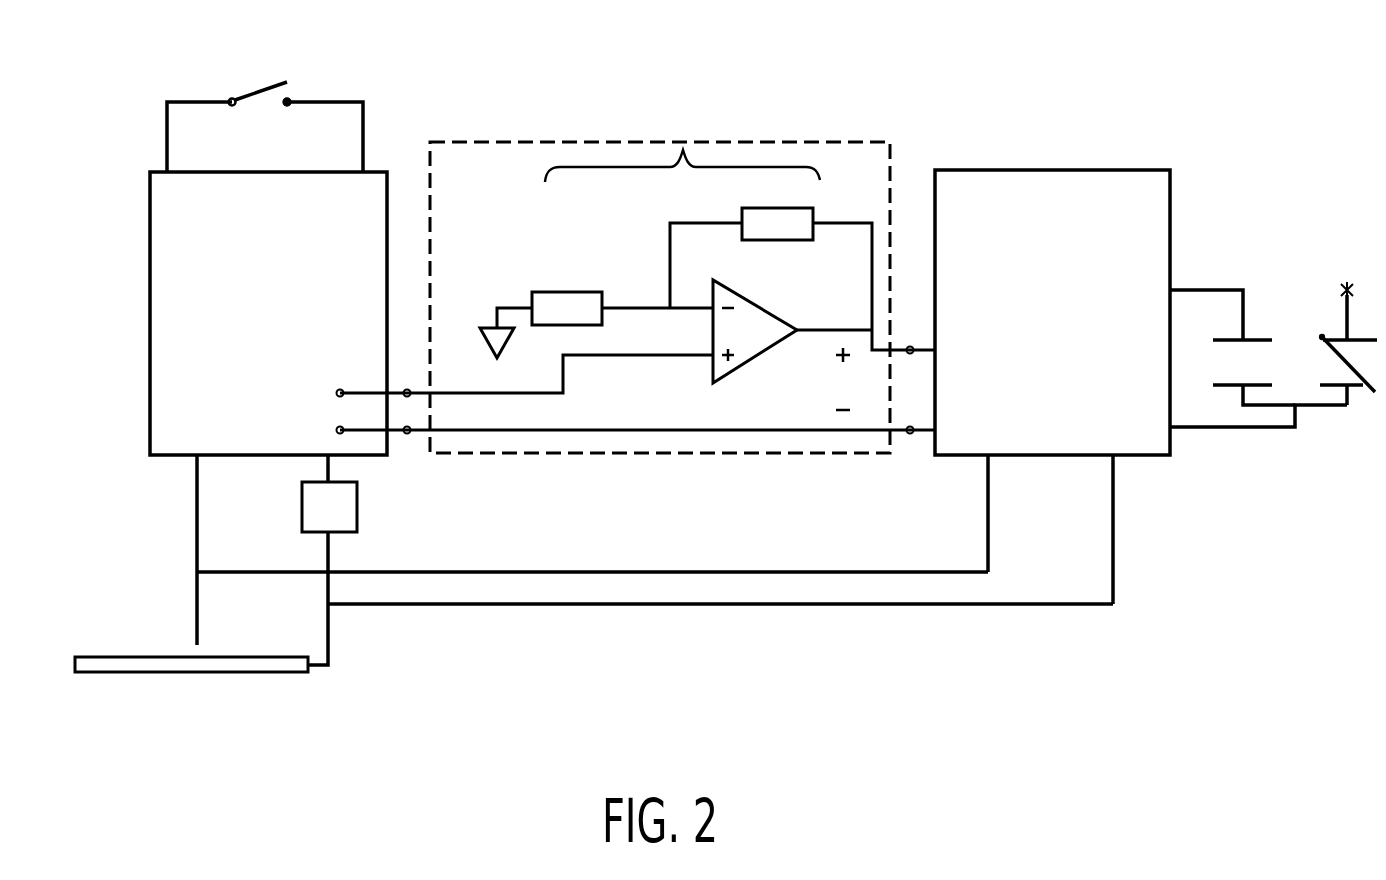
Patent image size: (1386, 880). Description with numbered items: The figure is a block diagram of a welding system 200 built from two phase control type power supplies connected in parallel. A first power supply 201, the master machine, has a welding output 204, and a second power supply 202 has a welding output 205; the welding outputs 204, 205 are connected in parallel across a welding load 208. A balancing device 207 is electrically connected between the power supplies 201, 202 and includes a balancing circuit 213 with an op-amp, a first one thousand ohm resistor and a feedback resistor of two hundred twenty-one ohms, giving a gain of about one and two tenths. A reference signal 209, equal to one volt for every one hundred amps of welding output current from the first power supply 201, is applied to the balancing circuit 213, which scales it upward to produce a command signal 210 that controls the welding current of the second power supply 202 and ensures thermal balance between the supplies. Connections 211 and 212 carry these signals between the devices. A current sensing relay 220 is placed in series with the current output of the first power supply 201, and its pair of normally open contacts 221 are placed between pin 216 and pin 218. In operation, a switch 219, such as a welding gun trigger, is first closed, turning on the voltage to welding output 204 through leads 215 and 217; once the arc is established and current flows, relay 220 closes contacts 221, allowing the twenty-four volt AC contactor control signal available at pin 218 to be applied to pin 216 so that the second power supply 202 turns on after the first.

The welding system 200 is at (1066, 640).
The first power supply 201 is at (150, 337).
The second power supply 202 is at (1112, 170).
The welding output 204 is at (259, 470).
The welding output 205 is at (1051, 470).
The balancing device 207 is at (827, 142).
The welding load 208 is at (197, 683).
The reference signal 209 is at (309, 416).
The command signal 210 is at (812, 391).
The common lead 211 is at (394, 413).
The control input terminals of machine B 212 is at (913, 372).
The balancing circuit 213 is at (683, 150).
The switch lead 215 is at (363, 116).
The pin 216 is at (1226, 430).
The switch lead 217 is at (167, 140).
The pin 218 is at (1210, 290).
The switch 219 is at (258, 52).
The current sensing relay 220 is at (302, 508).
The normally open contacts 221 is at (1328, 231).